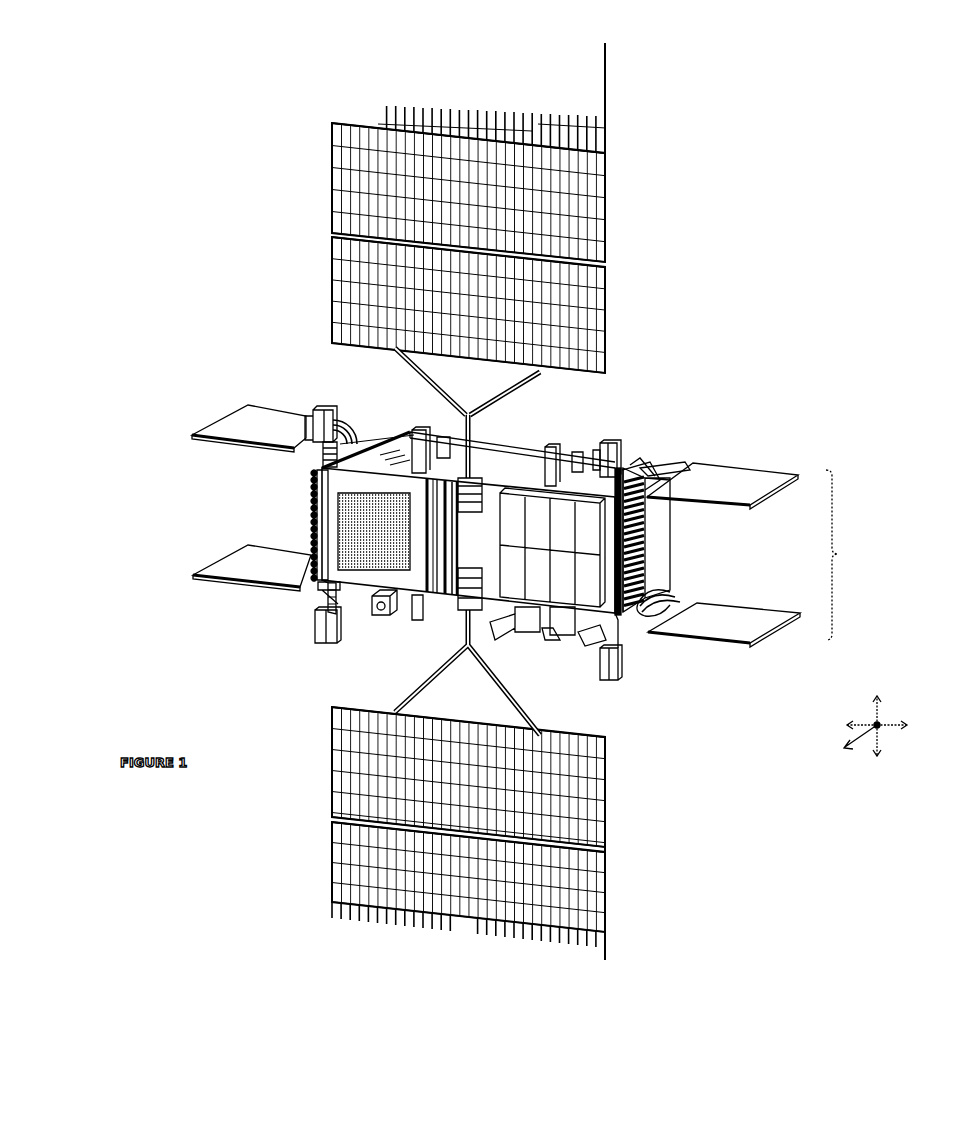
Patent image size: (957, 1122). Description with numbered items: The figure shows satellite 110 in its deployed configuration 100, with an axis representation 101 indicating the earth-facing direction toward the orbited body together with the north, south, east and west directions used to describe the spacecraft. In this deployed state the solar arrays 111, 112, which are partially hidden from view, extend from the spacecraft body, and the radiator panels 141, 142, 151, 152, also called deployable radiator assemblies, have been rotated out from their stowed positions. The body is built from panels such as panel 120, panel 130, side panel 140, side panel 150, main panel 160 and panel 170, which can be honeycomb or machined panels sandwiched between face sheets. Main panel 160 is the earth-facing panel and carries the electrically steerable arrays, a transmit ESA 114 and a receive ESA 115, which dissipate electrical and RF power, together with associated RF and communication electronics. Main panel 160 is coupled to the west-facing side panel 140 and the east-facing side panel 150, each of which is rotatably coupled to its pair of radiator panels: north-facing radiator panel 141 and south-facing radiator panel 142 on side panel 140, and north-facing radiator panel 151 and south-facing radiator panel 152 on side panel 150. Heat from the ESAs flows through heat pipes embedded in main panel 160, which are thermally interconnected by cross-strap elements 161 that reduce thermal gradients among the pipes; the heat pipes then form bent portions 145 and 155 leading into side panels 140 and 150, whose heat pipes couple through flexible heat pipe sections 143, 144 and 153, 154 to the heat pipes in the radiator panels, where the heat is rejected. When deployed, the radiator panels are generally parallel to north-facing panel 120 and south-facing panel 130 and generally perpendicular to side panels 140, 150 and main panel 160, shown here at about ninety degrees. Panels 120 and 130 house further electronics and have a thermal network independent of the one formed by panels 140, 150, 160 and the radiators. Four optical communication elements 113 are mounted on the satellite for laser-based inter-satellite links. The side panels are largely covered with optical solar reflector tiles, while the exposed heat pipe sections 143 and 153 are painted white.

The deployed configuration 100 is at (198, 236).
The axis representation 101 is at (913, 685).
The satellite 110 is at (343, 396).
The solar array 111 is at (610, 343).
The solar array 112 is at (612, 769).
The optical communication elements 113 is at (340, 412).
The transmit electrically steerable array 114 is at (338, 526).
The receive electrically steerable array 115 is at (514, 517).
The north-facing panel 120 is at (526, 466).
The south-facing panel 130 is at (445, 602).
The side panel 140 is at (318, 480).
The radiator panel 141 is at (232, 423).
The radiator panel 142 is at (232, 564).
The flexible heat pipe section 143 is at (362, 427).
The flexible heat pipe section 144 is at (318, 589).
The bent portion 145 is at (318, 515).
The side panel 150 is at (660, 540).
The radiator panel 151 is at (750, 492).
The radiator panel 152 is at (754, 633).
The flexible heat pipe section 153 is at (682, 464).
The flexible heat pipe section 154 is at (667, 600).
The bent portion 155 is at (650, 523).
The main panel 160 is at (373, 481).
The cross-strap elements 161 is at (440, 545).
The panel 170 is at (650, 467).